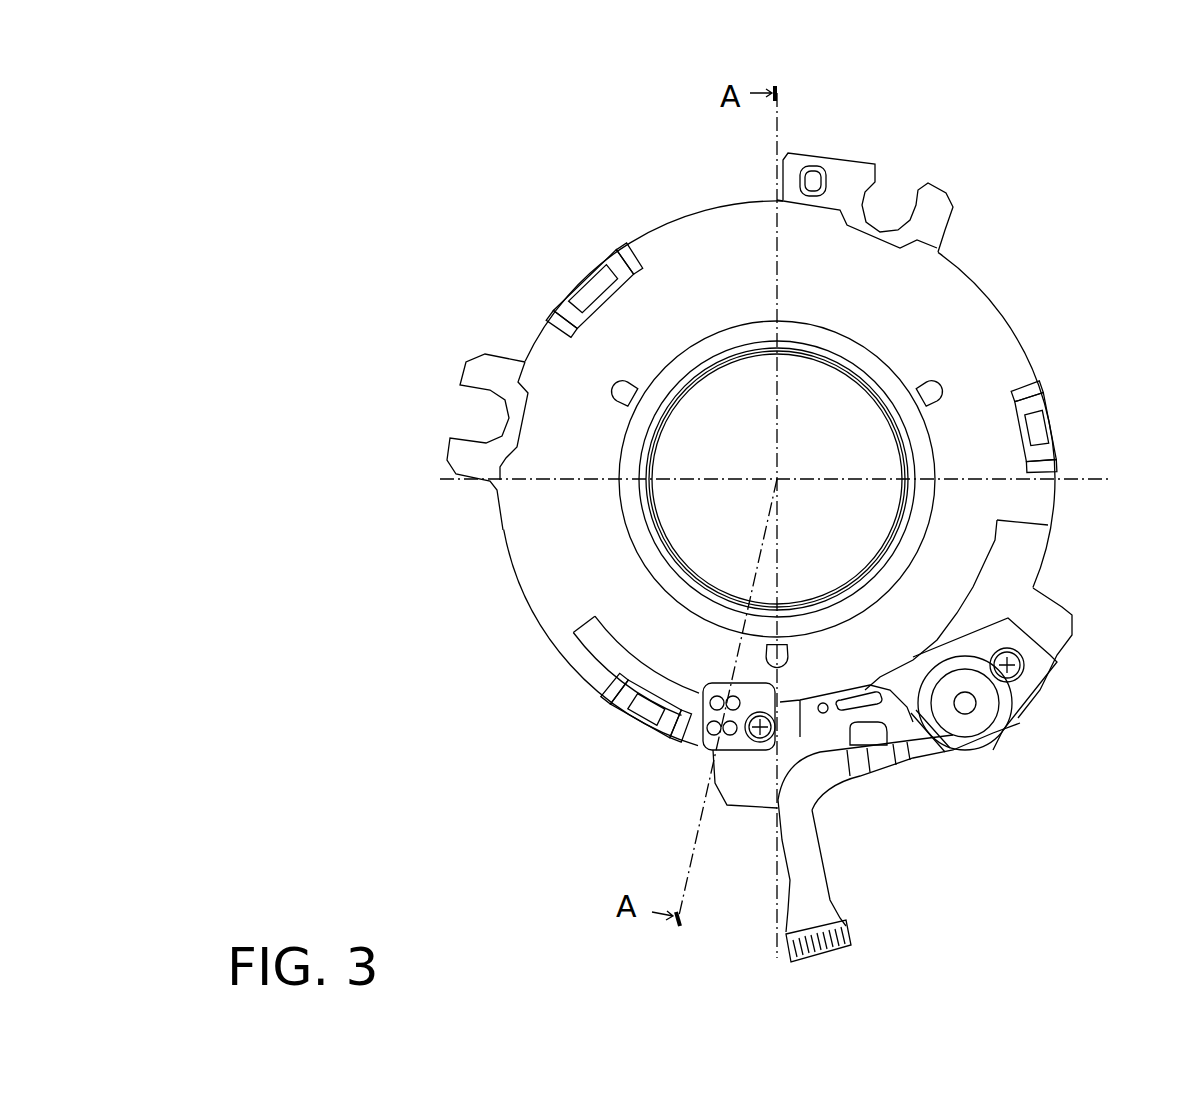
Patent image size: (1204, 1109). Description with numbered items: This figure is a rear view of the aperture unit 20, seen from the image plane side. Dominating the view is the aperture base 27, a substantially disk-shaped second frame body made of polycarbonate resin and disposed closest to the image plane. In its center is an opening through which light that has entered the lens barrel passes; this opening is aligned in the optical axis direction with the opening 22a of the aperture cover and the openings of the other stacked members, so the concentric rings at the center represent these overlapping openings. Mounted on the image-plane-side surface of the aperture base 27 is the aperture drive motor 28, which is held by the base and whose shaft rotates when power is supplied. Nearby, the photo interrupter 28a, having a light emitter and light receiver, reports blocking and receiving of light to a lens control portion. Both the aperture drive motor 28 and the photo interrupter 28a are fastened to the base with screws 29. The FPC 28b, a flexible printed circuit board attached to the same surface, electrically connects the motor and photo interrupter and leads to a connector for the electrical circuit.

The aperture unit 20 is at (574, 163).
The aperture base 27 is at (683, 255).
The opening 22a is at (860, 437).
The aperture drive motor 28 is at (985, 703).
The photo interrupter 28a is at (717, 724).
The FPC 28b is at (805, 862).
The screws 29 is at (776, 730).